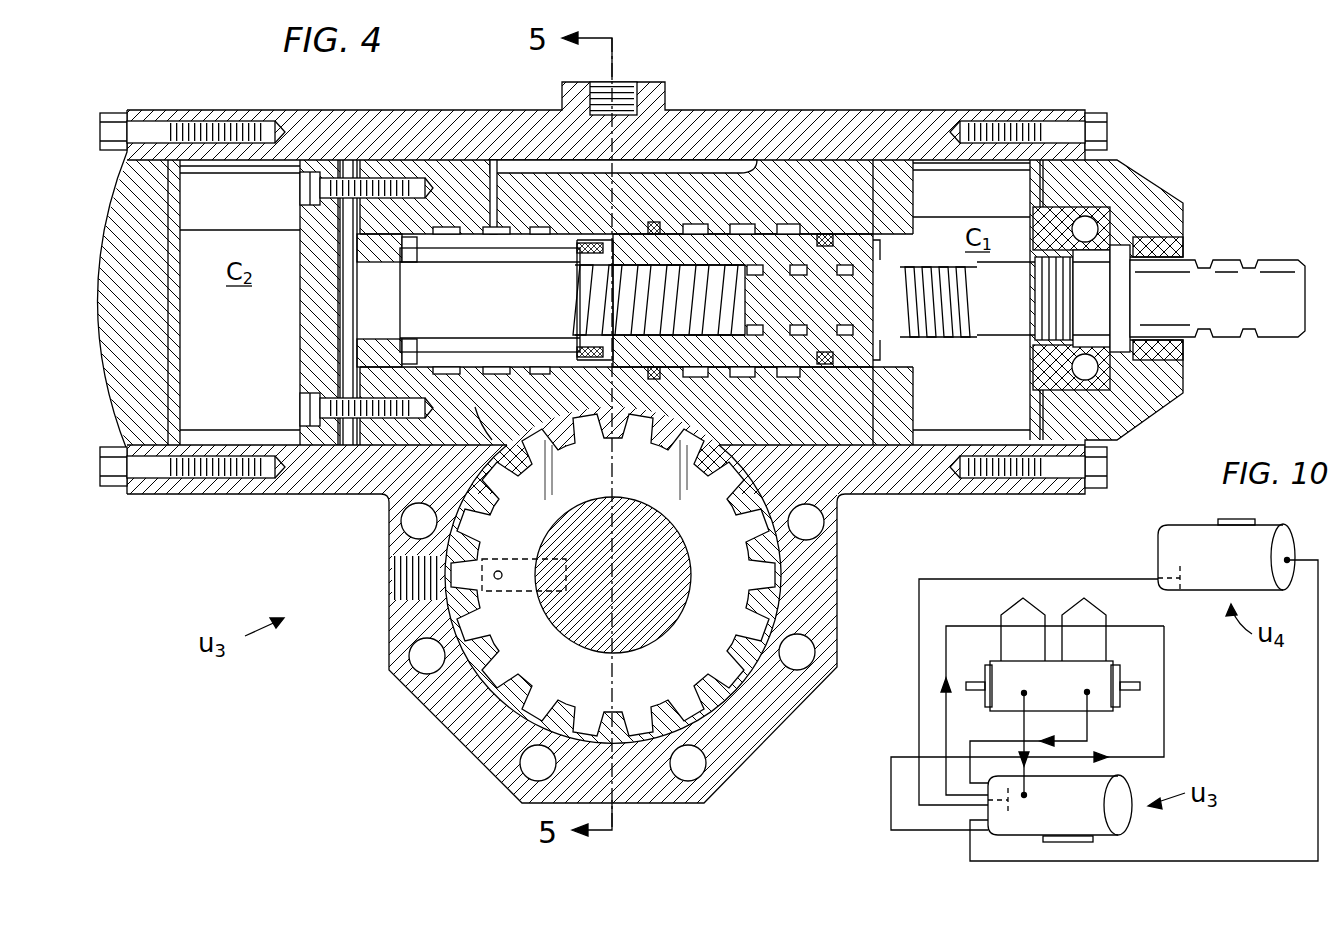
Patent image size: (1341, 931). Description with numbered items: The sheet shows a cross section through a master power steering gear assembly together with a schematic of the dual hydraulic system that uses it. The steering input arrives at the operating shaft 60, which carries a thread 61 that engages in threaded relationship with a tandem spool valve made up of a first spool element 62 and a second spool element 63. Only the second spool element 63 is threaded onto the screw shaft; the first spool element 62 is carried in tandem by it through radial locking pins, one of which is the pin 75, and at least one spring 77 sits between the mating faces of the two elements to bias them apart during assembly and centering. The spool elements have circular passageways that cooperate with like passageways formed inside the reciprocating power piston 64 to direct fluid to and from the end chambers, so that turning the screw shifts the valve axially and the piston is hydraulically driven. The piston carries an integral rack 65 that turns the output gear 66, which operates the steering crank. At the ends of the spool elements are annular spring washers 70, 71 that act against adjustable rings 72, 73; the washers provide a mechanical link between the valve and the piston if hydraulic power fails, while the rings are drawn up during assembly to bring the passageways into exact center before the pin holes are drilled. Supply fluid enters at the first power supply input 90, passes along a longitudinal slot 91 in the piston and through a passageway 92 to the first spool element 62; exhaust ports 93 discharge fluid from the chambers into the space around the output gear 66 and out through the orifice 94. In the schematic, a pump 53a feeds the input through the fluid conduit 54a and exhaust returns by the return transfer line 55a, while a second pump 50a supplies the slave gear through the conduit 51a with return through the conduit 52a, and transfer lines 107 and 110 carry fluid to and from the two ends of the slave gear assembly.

In FIG. 4, the operating shaft 60 is at (1178, 266).
In FIG. 4, the thread 61 is at (942, 330).
In FIG. 4, the first spool element 62 is at (452, 347).
In FIG. 4, the second spool element 63 is at (792, 234).
In FIG. 4, the power piston 64 is at (790, 165).
In FIG. 4, the integral rack 65 is at (762, 448).
In FIG. 4, the output gear 66 is at (733, 578).
In FIG. 4, the annular spring washer 70 is at (432, 234).
In FIG. 4, the annular spring washer 71 is at (866, 236).
In FIG. 4, the adjustable ring 72 is at (385, 235).
In FIG. 4, the adjustable ring 73 is at (906, 222).
In FIG. 4, the radial locking pin 75 is at (580, 302).
In FIG. 4, the spring 77 is at (568, 244).
In FIG. 4, the first power supply input 90 is at (622, 88).
In FIG. 4, the longitudinal slot 91 is at (700, 165).
In FIG. 4, the passageway 92 is at (495, 165).
In FIG. 4, the exhaust ports 93 is at (474, 420).
In FIG. 4, the orifice 94 is at (402, 584).
In FIG. 10, the pump 50a is at (1076, 615).
In FIG. 10, the conduit 51a is at (1087, 727).
In FIG. 10, the conduit 52a is at (1165, 675).
In FIG. 10, the pump 53a is at (1012, 616).
In FIG. 10, the fluid conduit 54a is at (1024, 725).
In FIG. 10, the return transfer line 55a is at (948, 632).
In FIG. 10, the transfer line 107 is at (919, 709).
In FIG. 10, the transfer line 110 is at (1318, 735).